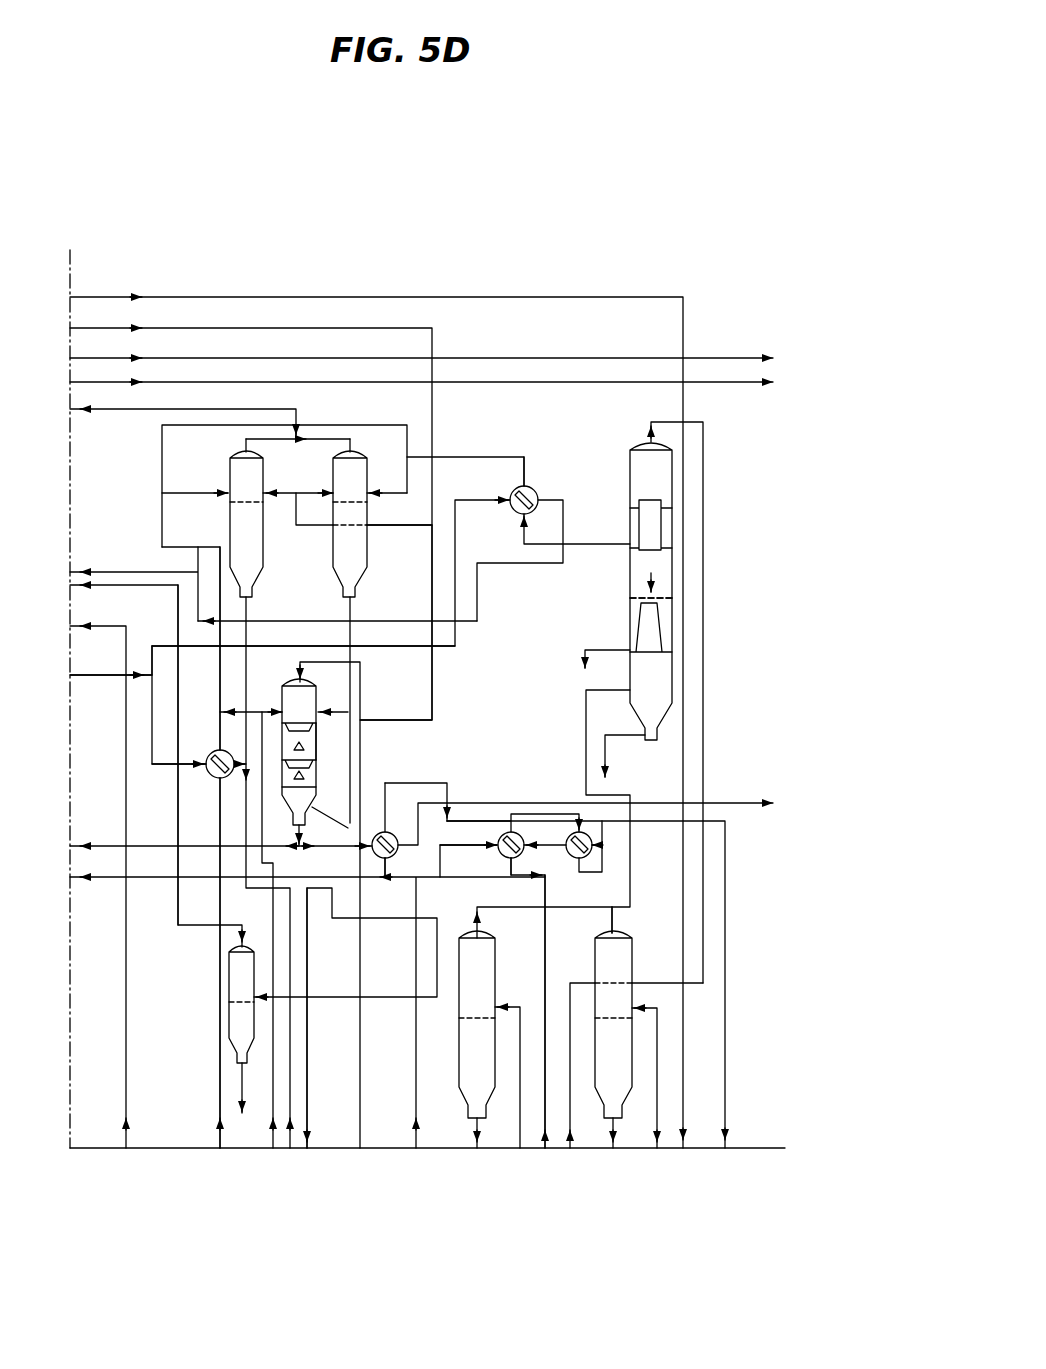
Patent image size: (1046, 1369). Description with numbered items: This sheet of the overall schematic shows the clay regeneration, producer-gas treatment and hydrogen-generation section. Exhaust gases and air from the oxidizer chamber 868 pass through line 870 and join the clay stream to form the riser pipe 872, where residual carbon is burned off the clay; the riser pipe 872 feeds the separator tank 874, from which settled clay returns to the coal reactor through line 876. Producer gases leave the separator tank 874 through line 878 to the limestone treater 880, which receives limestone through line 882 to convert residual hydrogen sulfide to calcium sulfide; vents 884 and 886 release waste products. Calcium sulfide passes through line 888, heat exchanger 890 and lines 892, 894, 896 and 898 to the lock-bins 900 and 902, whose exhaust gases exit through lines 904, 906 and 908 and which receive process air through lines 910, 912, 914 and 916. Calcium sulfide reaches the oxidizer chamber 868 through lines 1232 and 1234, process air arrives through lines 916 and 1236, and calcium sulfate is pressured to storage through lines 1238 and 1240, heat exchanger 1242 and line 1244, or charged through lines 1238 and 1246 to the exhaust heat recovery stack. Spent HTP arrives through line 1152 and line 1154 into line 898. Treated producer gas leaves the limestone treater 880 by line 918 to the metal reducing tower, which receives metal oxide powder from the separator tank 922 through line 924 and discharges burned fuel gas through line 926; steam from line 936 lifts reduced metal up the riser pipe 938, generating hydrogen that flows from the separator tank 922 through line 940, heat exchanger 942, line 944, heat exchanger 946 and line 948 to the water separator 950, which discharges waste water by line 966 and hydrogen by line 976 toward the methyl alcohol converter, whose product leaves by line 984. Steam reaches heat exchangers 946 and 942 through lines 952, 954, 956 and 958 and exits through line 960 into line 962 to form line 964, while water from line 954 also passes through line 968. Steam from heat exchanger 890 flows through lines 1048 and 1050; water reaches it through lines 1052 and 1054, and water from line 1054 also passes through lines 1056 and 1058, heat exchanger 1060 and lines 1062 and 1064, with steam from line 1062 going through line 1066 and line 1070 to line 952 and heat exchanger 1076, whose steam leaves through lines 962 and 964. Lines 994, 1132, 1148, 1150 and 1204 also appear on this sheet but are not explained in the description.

The line 936 is at (136, 298).
The line 916 is at (136, 328).
The line 984 is at (136, 358).
The stream line 994 is at (136, 382).
The line 908 is at (136, 408).
The line 896 is at (366, 426).
The line 904 is at (246, 439).
The line 906 is at (350, 439).
The line 898 is at (195, 481).
The line 910 is at (278, 493).
The line 912 is at (353, 480).
The line 914 is at (296, 525).
The lock-bin 900 is at (263, 569).
The lock-bin 902 is at (367, 578).
The line 894 is at (432, 450).
The line 892 is at (524, 462).
The heat exchanger 890 is at (534, 488).
The line 1048 is at (554, 500).
The line 888 is at (534, 536).
The line 918 is at (646, 426).
The line 882 is at (626, 574).
The limestone treater 880 is at (628, 592).
The vent 884 is at (620, 644).
The line 878 is at (590, 692).
The vent 886 is at (617, 736).
The line 1052 is at (480, 494).
The line 1054 is at (138, 668).
The line 1064 is at (222, 648).
The line 1050 is at (174, 572).
The line 1154 is at (165, 520).
The stream line 1132 is at (210, 636).
The line 1232 is at (350, 628).
The line 1234 is at (352, 604).
The line 1236 is at (440, 551).
The line 1238 is at (343, 780).
The line 870 is at (299, 684).
The oxidizer chamber 868 is at (316, 744).
The line 1152 is at (277, 708).
The line 976 is at (82, 588).
The stream line 1204 is at (132, 628).
The line 1056 is at (177, 689).
The stream line 1150 is at (218, 732).
The heat exchanger 1060 is at (202, 740).
The line 1058 is at (176, 762).
The line 1062 is at (220, 778).
The stream line 1148 is at (220, 1150).
The line 1066 is at (230, 798).
The line 1246 is at (116, 846).
The line 1240 is at (332, 846).
The line 1070 is at (396, 858).
The line 926 is at (84, 882).
The line 952 is at (374, 872).
The line 954 is at (436, 874).
The line 1244 is at (414, 806).
The heat exchanger 1076 is at (391, 788).
The heat exchanger 1242 is at (413, 784).
The line 962 is at (385, 806).
The line 964 is at (640, 818).
The line 948 is at (488, 818).
The line 958 is at (544, 814).
The line 944 is at (532, 841).
The heat exchanger 946 is at (468, 835).
The heat exchanger 942 is at (535, 999).
The line 956 is at (510, 872).
The line 968 is at (544, 876).
The line 960 is at (588, 872).
The separator tank 874 is at (495, 952).
The line 876 is at (477, 1150).
The riser pipe 872 is at (516, 998).
The line 940 is at (614, 922).
The line 924 is at (613, 1150).
The separator tank 922 is at (632, 976).
The riser pipe 938 is at (674, 1018).
The water separator 950 is at (226, 984).
The line 966 is at (240, 1076).